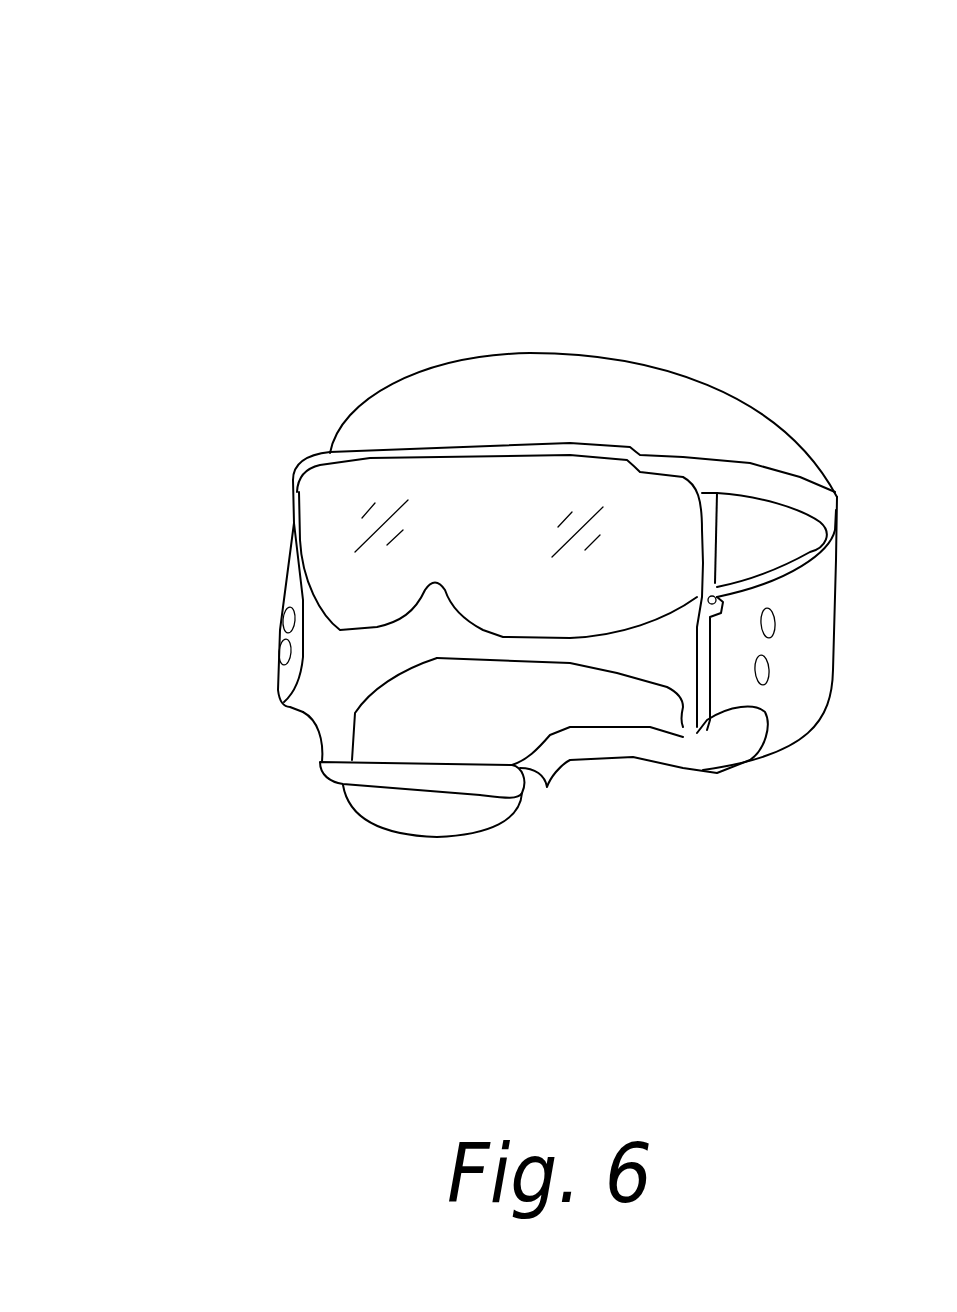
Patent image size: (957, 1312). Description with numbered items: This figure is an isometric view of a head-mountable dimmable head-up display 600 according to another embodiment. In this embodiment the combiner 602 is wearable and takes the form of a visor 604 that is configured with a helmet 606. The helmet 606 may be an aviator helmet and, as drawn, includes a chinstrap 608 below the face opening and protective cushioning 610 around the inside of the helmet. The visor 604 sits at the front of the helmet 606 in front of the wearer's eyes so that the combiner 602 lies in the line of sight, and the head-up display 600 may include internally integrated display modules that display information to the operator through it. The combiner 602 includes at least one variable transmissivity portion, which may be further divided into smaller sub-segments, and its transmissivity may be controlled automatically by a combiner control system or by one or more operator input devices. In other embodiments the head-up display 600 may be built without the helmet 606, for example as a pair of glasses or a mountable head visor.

The head-mountable dimmable head-up display 600 is at (338, 104).
The combiner 602 is at (447, 507).
The visor 604 is at (604, 460).
The helmet 606 is at (558, 355).
The chinstrap 608 is at (407, 833).
The protective cushioning 610 is at (356, 675).